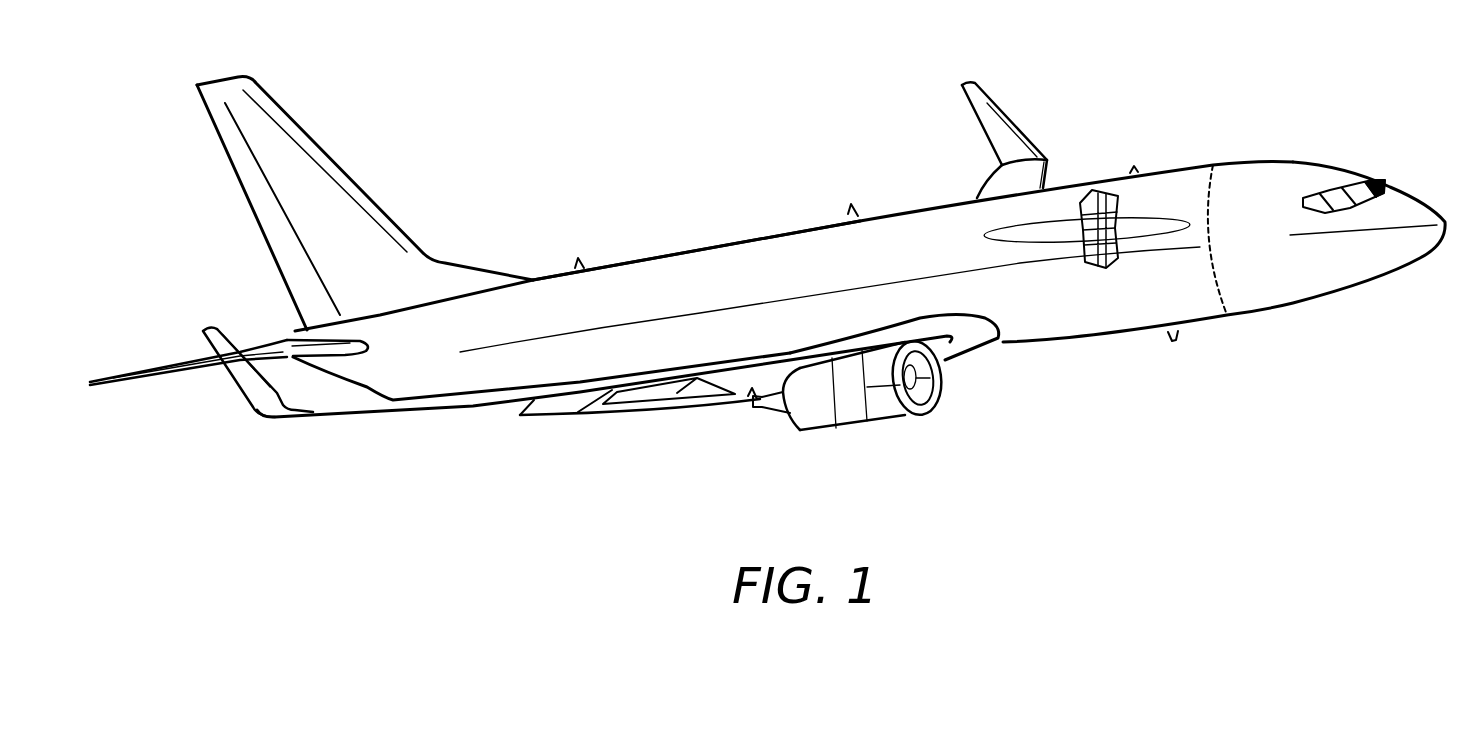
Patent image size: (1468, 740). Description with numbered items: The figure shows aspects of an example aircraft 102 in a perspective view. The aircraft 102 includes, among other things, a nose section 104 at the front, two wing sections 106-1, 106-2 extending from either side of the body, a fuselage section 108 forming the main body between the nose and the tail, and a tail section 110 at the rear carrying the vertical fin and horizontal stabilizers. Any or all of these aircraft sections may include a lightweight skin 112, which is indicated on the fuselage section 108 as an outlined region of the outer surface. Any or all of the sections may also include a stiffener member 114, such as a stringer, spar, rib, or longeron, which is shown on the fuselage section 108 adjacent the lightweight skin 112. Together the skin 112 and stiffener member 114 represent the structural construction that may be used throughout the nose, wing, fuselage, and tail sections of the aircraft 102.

The aircraft 102 is at (1126, 441).
The nose section 104 is at (1367, 158).
The wing section 106-1 is at (1068, 168).
The wing section 106-2 is at (636, 359).
The fuselage section 108 is at (762, 229).
The tail section 110 is at (460, 233).
The lightweight skin 112 is at (1010, 237).
The stiffener member 114 is at (1190, 230).